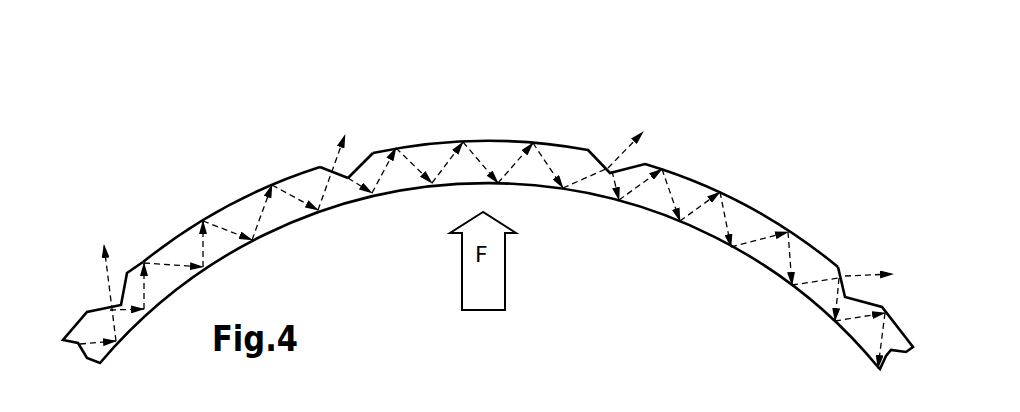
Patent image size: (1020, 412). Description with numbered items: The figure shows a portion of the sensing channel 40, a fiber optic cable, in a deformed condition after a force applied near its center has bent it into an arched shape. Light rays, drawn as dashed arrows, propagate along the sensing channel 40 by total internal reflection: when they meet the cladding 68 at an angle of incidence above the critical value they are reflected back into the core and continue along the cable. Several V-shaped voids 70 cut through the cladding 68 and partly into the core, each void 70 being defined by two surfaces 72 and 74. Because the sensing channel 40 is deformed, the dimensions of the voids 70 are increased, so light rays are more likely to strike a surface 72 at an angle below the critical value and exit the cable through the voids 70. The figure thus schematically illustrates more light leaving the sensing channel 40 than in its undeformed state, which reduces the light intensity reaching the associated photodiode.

The sensing channel 40 is at (655, 240).
The cladding 68 is at (502, 147).
The voids 70 is at (118, 273).
The surface 72 is at (327, 167).
The surface 74 is at (368, 152).